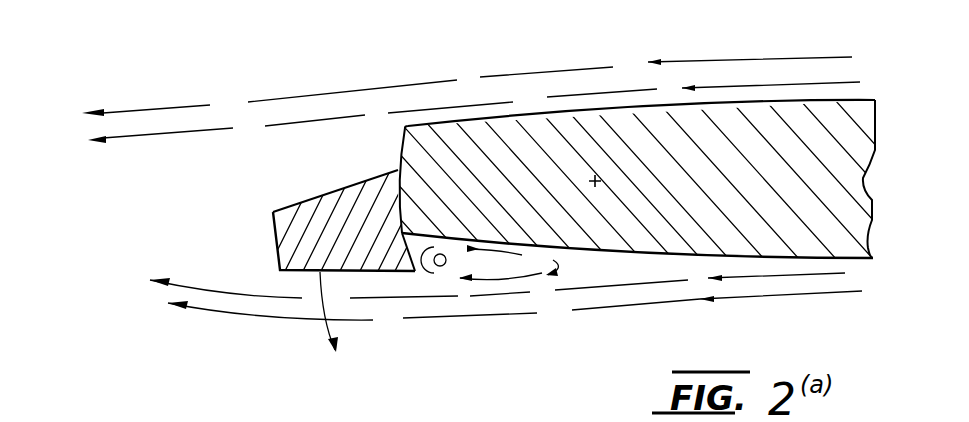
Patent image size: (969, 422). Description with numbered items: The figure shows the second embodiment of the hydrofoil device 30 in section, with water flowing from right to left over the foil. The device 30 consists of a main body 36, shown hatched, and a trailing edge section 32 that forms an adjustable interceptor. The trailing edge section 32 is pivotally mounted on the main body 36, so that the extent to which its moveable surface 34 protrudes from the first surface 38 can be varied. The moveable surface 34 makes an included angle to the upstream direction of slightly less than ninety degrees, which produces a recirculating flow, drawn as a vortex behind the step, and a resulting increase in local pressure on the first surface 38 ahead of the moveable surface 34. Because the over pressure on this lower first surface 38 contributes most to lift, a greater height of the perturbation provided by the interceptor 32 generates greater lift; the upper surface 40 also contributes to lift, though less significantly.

The hydrofoil device 30 is at (626, 186).
The trailing edge section 32 is at (288, 228).
The moveable surface 34 is at (403, 270).
The main body 36 is at (733, 135).
The first surface 38 is at (740, 257).
The upper surface 40 is at (468, 118).